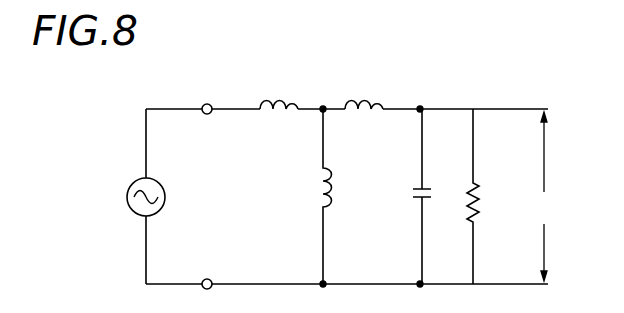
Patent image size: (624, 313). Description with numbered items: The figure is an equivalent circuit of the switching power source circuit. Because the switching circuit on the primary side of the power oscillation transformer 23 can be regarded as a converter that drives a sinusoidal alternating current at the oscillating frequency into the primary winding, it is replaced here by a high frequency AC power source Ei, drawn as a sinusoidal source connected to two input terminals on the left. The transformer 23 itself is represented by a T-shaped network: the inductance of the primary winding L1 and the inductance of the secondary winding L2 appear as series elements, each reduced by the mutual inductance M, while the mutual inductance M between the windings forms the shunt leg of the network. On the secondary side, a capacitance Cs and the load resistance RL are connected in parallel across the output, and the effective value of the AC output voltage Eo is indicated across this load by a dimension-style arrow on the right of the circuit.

The power oscillation transformer 23 is at (323, 100).
The inductance of the primary winding L1 is at (275, 92).
The inductance of the secondary winding L2 is at (359, 92).
The mutual inductance M is at (317, 196).
The capacitance Cs is at (410, 196).
The load resistance RL is at (483, 196).
The effective value of the AC output voltage Eo is at (540, 196).
The high frequency AC power source Ei is at (180, 196).